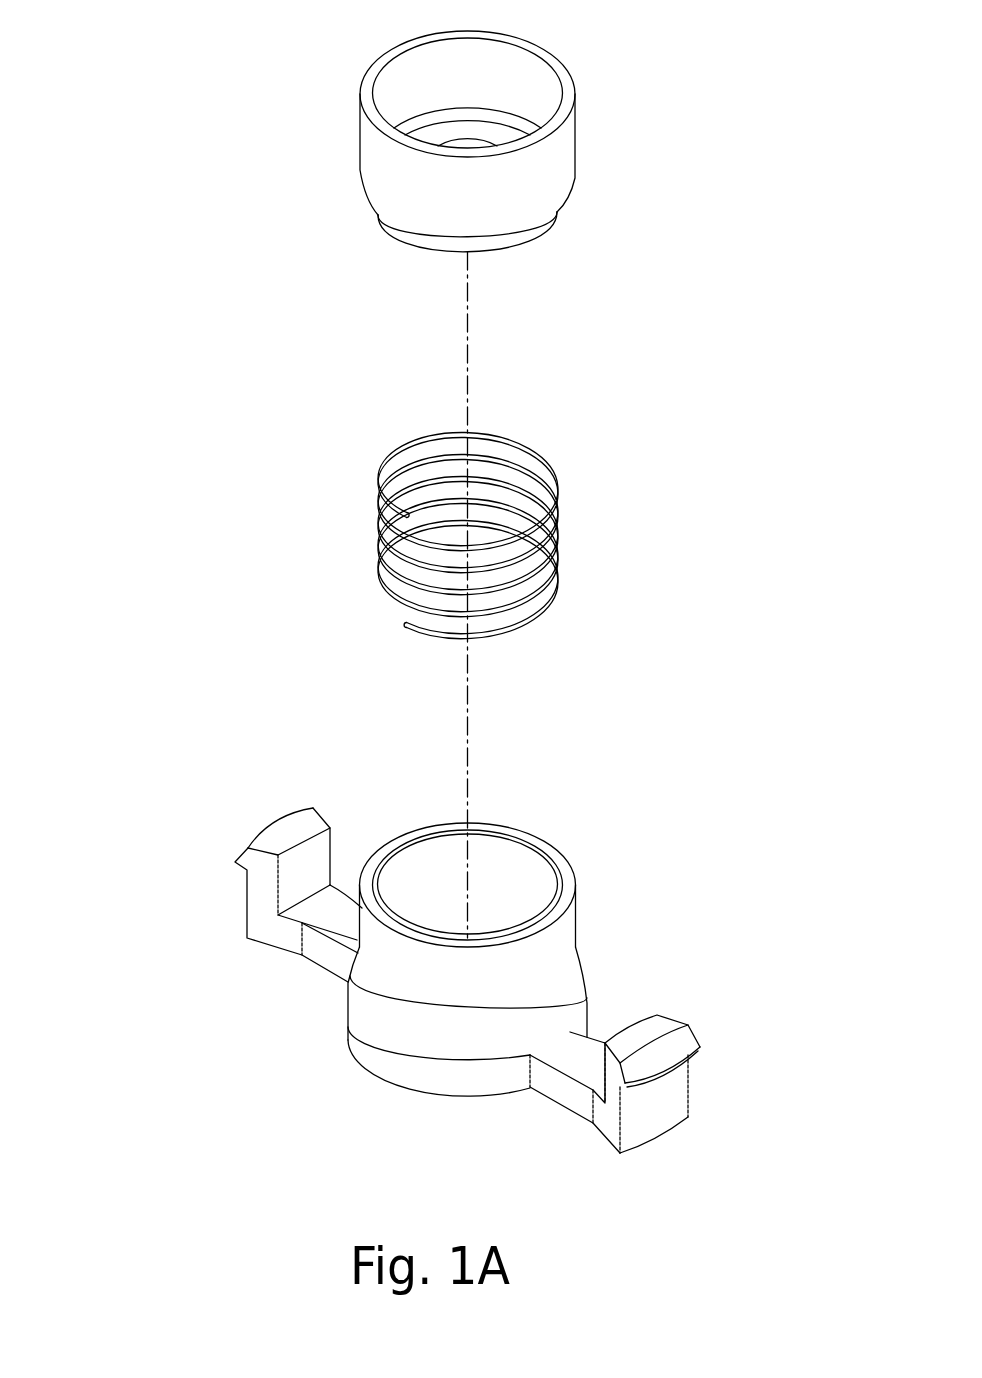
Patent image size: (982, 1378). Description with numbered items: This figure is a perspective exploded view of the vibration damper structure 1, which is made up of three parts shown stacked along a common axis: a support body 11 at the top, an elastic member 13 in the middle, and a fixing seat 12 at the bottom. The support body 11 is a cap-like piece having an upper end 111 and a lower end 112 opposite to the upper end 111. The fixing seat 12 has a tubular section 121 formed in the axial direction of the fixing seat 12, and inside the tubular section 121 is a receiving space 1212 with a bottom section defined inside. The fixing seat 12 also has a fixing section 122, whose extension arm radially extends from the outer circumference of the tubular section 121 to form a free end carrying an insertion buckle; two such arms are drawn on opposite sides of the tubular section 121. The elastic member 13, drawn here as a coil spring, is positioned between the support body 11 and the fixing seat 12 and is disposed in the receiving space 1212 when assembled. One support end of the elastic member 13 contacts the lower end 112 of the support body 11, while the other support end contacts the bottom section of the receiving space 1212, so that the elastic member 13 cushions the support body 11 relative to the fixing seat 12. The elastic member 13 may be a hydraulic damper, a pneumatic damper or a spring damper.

The vibration damper structure 1 is at (695, 188).
The support body 11 is at (375, 175).
The upper end 111 is at (552, 64).
The lower end 112 is at (488, 250).
The fixing seat 12 is at (368, 1048).
The tubular section 121 is at (558, 945).
The receiving space 1212 is at (497, 880).
The fixing section 122 is at (213, 898).
The elastic member 13 is at (382, 530).